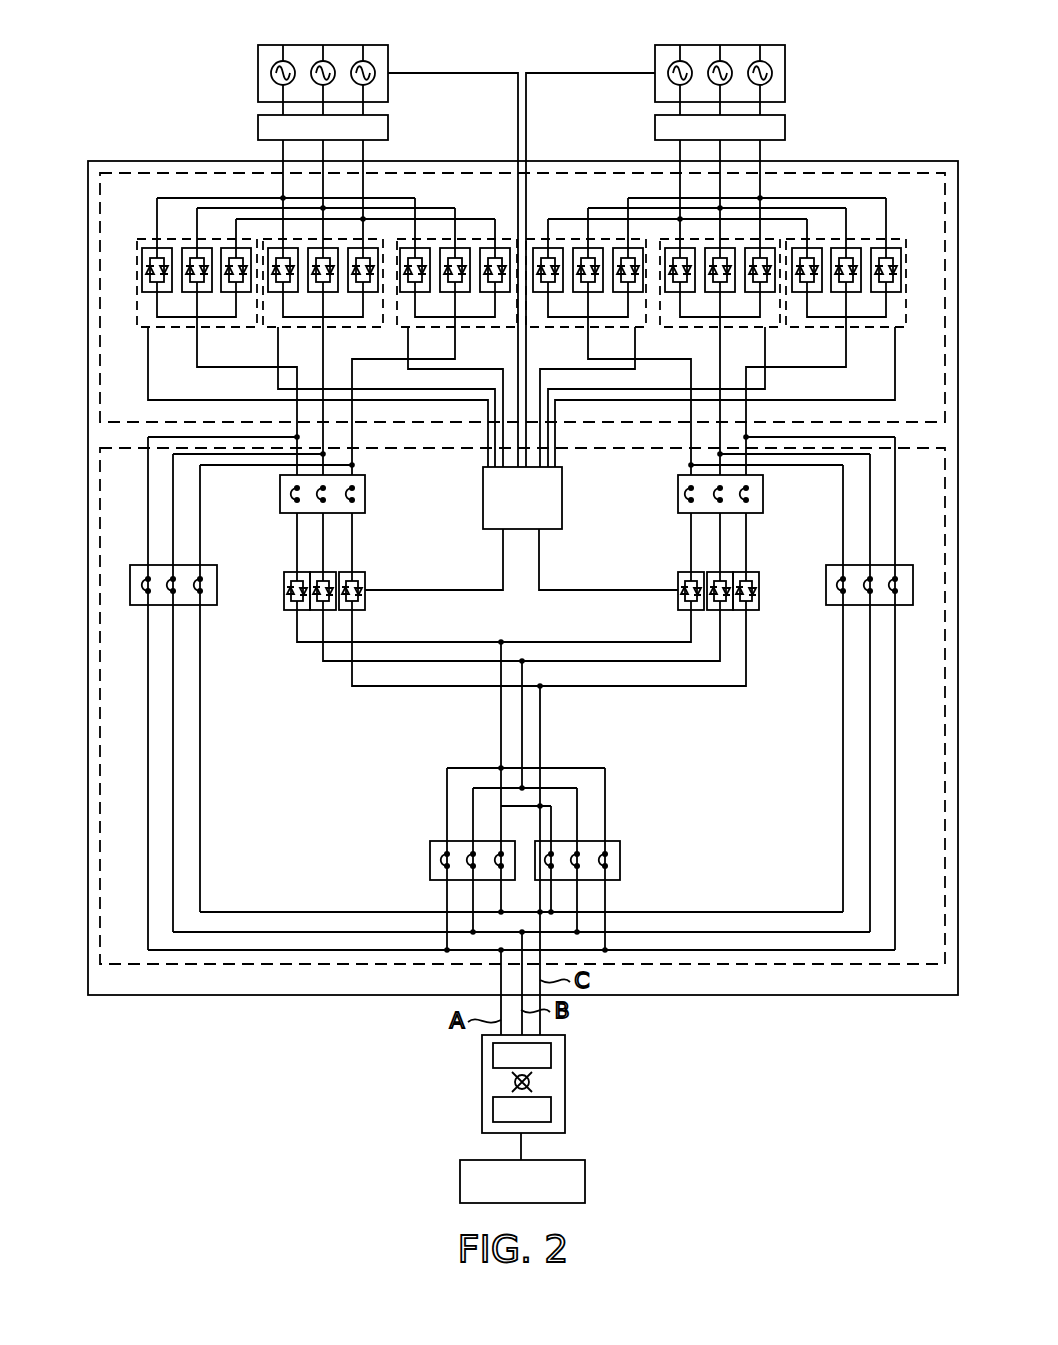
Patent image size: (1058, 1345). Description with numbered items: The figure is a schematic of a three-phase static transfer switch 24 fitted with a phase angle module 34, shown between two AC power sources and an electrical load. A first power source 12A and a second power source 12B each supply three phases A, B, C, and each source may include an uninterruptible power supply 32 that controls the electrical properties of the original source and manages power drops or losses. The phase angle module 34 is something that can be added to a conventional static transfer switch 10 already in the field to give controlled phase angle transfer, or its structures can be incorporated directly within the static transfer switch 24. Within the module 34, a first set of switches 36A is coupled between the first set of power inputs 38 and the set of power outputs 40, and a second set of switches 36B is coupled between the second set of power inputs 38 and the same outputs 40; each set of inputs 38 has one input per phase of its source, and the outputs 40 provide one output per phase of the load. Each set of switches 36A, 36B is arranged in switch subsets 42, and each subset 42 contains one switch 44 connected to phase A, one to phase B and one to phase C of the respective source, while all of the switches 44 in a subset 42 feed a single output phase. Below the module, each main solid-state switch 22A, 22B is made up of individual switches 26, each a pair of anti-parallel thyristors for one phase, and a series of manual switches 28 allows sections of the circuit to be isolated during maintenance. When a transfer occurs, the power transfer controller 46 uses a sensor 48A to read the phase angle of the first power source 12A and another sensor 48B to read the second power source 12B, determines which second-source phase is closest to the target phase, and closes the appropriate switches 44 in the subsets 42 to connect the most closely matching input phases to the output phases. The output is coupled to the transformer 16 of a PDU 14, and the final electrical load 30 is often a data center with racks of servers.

The static transfer switch 10 is at (100, 468).
The first power source 12A is at (258, 52).
The second power source 12B is at (785, 52).
The PDU 14 is at (565, 1048).
The transformer 16 is at (565, 1104).
The first main switch 22A is at (276, 613).
The second main switch 22B is at (768, 613).
The static transfer switch 24 is at (140, 160).
The switch 26 is at (291, 571).
The manual switch 28 is at (365, 490).
The electrical load 30 is at (585, 1172).
The uninterruptible power supply 32 is at (258, 120).
The phase angle module 34 is at (100, 208).
The first set of switches 36A is at (431, 192).
The second set of switches 36B is at (611, 192).
The power input 38 is at (283, 198).
The power output 40 is at (323, 348).
The switch subset 42 is at (150, 238).
The switch 44 is at (166, 295).
The power transfer controller 46 is at (562, 500).
The sensor 48A is at (432, 73).
The sensor 48B is at (611, 73).